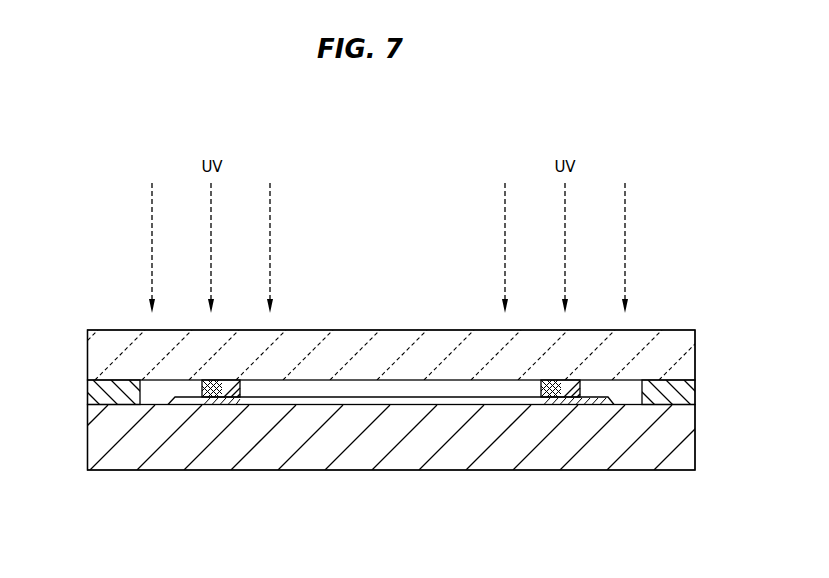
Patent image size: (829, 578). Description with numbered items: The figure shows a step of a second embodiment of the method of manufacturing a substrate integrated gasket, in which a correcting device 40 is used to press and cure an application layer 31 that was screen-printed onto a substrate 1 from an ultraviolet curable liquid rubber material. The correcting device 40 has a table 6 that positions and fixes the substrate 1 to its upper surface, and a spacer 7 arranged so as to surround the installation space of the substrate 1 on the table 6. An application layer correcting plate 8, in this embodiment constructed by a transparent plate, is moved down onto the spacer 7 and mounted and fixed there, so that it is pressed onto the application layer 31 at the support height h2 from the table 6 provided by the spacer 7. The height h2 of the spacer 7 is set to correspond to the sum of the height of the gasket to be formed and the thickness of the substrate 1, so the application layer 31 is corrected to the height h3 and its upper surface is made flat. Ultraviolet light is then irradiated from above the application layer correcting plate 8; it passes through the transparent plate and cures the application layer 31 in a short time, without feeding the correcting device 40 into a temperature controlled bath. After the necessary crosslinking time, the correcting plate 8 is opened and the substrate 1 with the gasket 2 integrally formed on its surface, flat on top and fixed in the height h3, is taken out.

The correcting device 40 is at (113, 306).
The application layer correcting plate 8 is at (408, 347).
The table 6 is at (396, 453).
The spacer 7 is at (87, 392).
The substrate 1 is at (577, 401).
The application layer 31 is at (446, 341).
The gasket 2 is at (570, 380).
The height of the spacer h2 is at (87, 404).
The corrected height of the application layer h3 is at (155, 353).